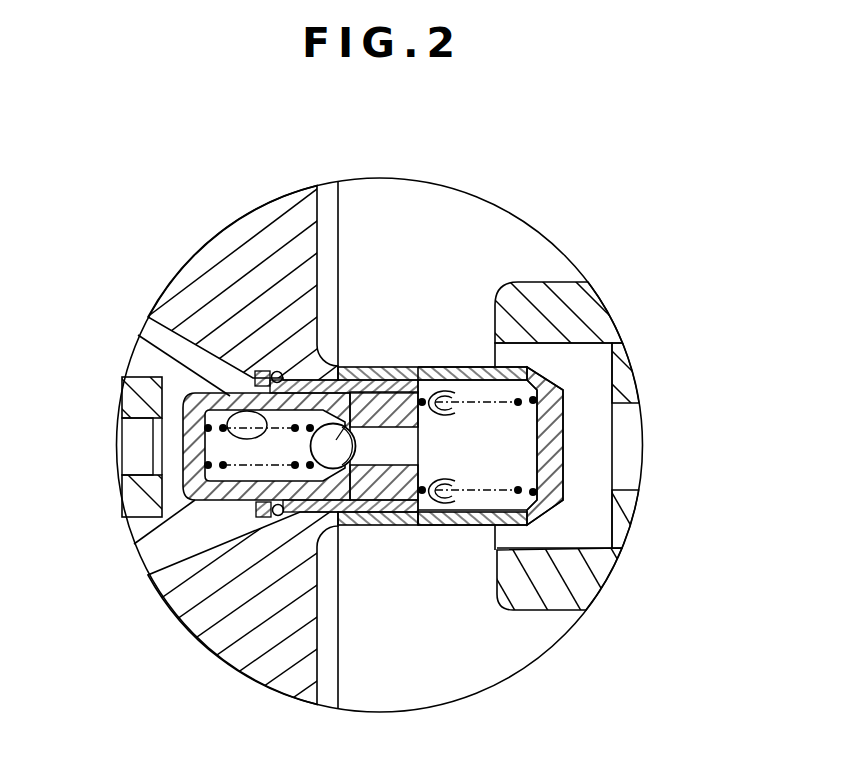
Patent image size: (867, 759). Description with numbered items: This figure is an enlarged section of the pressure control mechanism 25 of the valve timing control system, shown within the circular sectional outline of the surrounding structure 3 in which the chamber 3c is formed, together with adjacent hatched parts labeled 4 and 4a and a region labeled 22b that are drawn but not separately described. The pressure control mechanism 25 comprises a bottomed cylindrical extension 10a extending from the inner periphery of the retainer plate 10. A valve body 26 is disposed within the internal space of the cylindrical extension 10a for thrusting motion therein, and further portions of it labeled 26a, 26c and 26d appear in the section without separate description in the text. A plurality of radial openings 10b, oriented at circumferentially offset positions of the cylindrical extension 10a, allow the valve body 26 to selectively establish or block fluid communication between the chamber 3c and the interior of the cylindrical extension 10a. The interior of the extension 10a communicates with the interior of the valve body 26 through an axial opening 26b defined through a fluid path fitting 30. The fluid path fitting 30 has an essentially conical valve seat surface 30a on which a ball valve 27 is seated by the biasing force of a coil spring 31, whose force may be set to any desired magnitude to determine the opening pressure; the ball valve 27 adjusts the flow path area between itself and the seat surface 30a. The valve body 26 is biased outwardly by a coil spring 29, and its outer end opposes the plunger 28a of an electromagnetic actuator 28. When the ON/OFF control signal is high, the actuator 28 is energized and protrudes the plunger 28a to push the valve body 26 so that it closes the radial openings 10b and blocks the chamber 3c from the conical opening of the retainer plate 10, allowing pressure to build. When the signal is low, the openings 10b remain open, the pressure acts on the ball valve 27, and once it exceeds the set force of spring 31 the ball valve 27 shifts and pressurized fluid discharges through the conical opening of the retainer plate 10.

The housing 3 is at (457, 680).
The chamber 3c is at (437, 683).
The cover 4 is at (540, 624).
The cover flange portion 4a is at (580, 307).
The retainer plate 10 is at (232, 243).
The bottomed cylindrical extension 10a is at (397, 367).
The radial openings 10b is at (440, 390).
The chamber 22b is at (593, 463).
The pressure control mechanism 25 is at (297, 362).
The valve body 26 is at (210, 644).
The valve housing wall portion 26a is at (400, 520).
The axial opening 26b is at (432, 520).
The inclined passage 26c is at (125, 552).
The inclined passage 26d is at (143, 336).
The ball valve 27 is at (345, 377).
The electromagnetic actuator 28 is at (130, 497).
The plunger 28a is at (130, 448).
The coil spring 29 is at (556, 385).
The fluid path fitting 30 is at (363, 520).
The conical valve seat surface 30a is at (310, 520).
The coil spring 31 is at (298, 430).